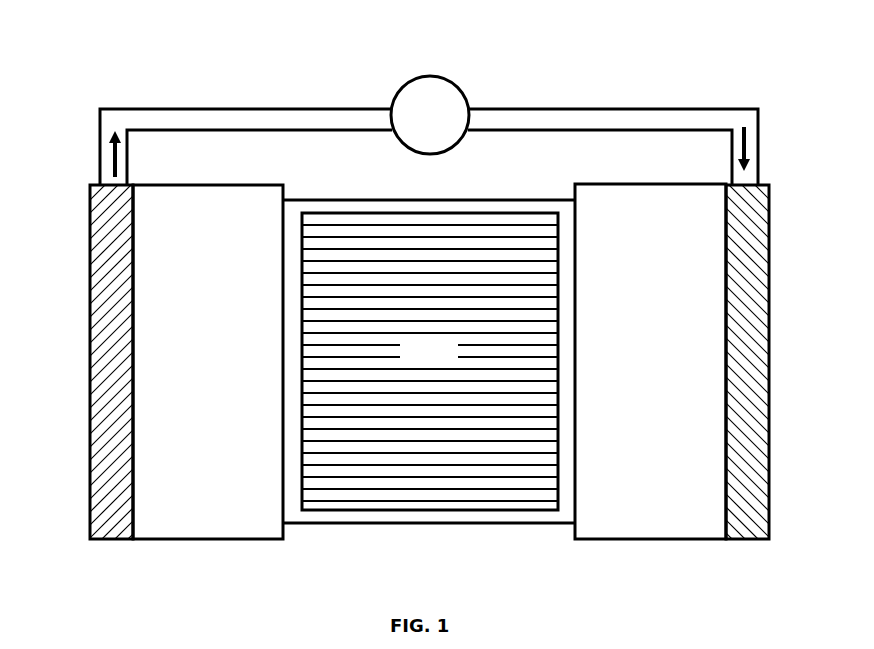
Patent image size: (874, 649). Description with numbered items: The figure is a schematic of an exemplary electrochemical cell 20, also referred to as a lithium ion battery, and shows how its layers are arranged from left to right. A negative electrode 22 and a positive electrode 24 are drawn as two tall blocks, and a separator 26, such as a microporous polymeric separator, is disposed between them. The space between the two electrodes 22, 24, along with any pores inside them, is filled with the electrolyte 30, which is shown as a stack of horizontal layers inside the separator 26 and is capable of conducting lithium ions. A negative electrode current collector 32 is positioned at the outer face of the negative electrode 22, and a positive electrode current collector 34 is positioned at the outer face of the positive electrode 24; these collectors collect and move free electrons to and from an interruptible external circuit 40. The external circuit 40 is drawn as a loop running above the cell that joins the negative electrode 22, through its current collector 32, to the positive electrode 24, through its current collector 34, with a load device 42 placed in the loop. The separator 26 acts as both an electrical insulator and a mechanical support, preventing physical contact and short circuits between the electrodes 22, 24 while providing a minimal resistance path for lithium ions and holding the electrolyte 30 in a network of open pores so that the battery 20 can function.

The electrochemical cell 20 is at (100, 61).
The negative electrode 22 is at (208, 362).
The positive electrode 24 is at (650, 361).
The separator 26 is at (427, 523).
The electrolyte 30 is at (430, 361).
The negative electrode current collector 32 is at (90, 263).
The positive electrode current collector 34 is at (769, 257).
The external circuit 40 is at (247, 108).
The load device 42 is at (430, 115).